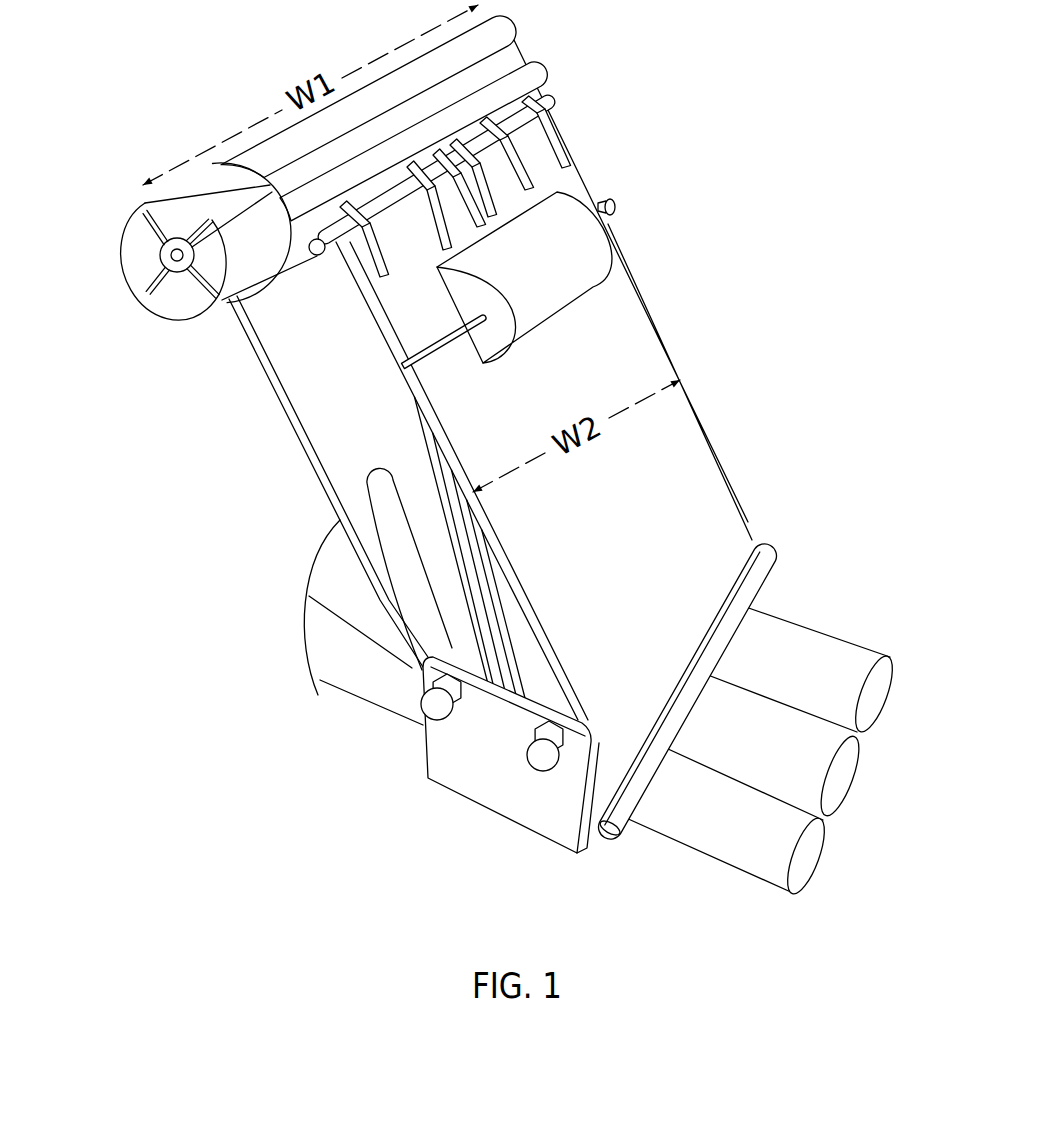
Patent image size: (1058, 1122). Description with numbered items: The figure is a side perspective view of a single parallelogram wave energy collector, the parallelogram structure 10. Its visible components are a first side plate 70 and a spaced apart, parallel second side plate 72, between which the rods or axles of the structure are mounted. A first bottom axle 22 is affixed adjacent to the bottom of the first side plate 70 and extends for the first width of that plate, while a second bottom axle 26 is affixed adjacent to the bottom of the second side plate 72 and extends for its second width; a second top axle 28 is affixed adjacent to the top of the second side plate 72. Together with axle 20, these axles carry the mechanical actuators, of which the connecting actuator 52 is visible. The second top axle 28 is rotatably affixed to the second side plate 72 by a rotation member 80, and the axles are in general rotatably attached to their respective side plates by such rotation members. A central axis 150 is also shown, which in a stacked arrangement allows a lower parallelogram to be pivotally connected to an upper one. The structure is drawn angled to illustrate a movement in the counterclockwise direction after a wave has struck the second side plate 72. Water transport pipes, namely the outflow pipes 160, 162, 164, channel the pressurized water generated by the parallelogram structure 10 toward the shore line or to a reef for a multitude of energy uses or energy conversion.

The parallelogram structure 10 is at (378, 749).
The axle 20 is at (604, 851).
The first bottom axle 22 is at (535, 693).
The second bottom axle 26 is at (556, 67).
The second top axle 28 is at (311, 254).
The connecting actuator 52 is at (482, 610).
The first side plate 70 is at (353, 456).
The second side plate 72 is at (640, 341).
The rotation member 80 is at (487, 198).
The central axis 150 is at (117, 262).
The water transport pipe 160 is at (806, 640).
The water transport pipe 162 is at (823, 771).
The water transport pipe 164 is at (773, 863).